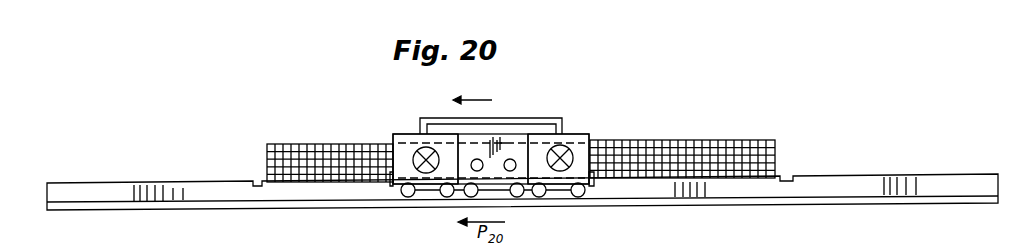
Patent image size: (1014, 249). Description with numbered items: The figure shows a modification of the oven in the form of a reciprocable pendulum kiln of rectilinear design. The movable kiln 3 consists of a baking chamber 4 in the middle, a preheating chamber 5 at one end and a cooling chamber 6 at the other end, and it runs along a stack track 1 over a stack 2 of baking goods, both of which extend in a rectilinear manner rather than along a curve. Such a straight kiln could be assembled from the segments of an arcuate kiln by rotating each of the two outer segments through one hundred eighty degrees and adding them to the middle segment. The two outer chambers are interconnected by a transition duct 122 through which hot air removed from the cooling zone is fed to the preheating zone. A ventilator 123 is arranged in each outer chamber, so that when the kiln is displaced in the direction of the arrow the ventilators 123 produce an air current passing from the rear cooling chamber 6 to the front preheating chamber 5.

The stack track 1 is at (840, 182).
The stack of baking goods 2 is at (720, 150).
The movable kiln 3 is at (560, 108).
The baking chamber 4 is at (513, 140).
The preheating chamber 5 is at (403, 150).
The cooling chamber 6 is at (572, 143).
The transition duct 122 is at (505, 117).
The ventilator 123 is at (427, 168).